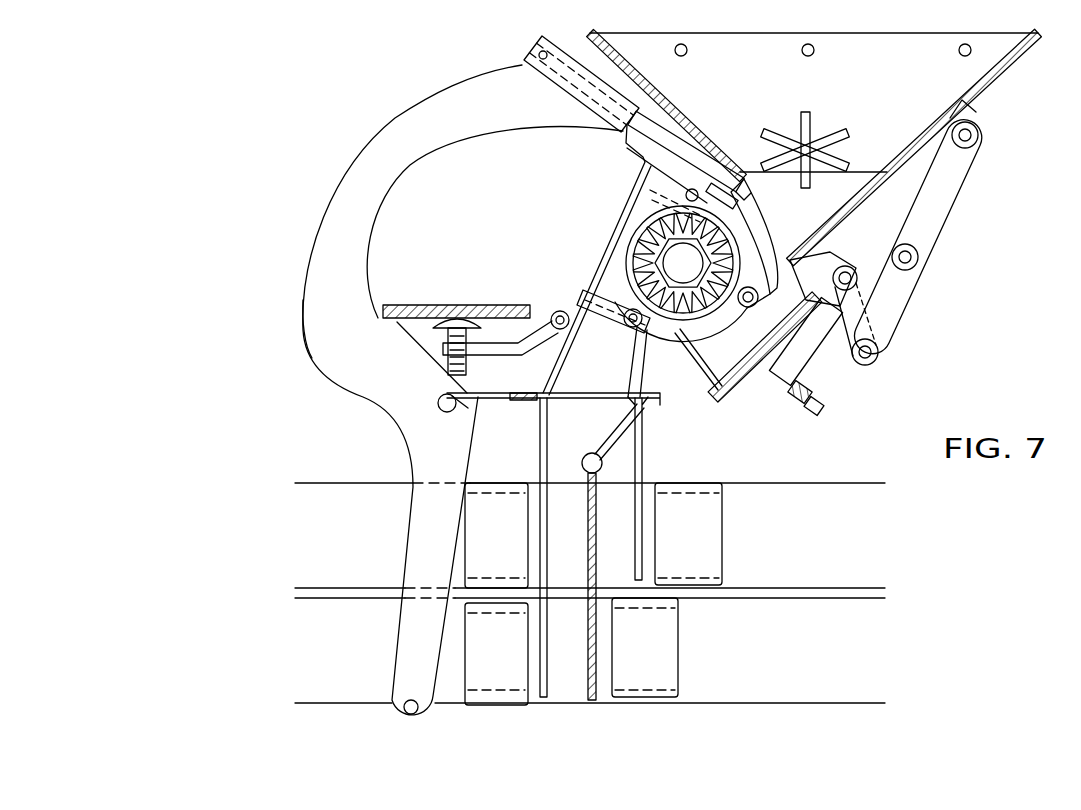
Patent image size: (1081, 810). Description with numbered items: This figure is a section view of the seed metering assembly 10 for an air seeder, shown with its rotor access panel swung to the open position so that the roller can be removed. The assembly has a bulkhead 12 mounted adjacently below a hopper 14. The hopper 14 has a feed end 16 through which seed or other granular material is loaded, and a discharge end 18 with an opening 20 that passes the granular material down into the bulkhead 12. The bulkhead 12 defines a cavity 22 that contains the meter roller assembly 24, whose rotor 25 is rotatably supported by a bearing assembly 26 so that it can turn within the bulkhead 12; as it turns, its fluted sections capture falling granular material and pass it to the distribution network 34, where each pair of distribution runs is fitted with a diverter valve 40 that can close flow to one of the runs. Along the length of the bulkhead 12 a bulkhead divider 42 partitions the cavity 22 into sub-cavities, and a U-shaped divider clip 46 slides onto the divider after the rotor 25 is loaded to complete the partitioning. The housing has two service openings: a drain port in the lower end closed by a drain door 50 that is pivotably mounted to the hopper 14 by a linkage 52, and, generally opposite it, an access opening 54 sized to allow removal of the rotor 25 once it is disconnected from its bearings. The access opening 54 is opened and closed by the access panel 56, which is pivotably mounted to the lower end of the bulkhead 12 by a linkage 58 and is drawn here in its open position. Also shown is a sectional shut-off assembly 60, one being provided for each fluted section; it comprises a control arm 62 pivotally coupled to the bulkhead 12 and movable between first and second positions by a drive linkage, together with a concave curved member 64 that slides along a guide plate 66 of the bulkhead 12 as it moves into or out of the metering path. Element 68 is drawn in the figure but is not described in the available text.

The seed metering assembly 10 is at (225, 98).
The bulkhead 12 is at (552, 372).
The hopper 14 is at (1020, 50).
The feed end 16 is at (900, 25).
The discharge end 18 is at (858, 172).
The opening 20 is at (830, 187).
The cavity 22 is at (737, 345).
The meter roller assembly 24 is at (610, 322).
The rotor 25 is at (683, 263).
The bearing assembly 26 is at (683, 365).
The distribution network 34 is at (367, 672).
The diverter valve 40 is at (603, 458).
The bulkhead divider 42 is at (820, 348).
The divider clip 46 is at (628, 198).
The drain door 50 is at (748, 385).
The linkage 52 is at (958, 178).
The access opening 54 is at (607, 227).
The access panel 56 is at (433, 305).
The linkage 58 is at (549, 311).
The shut-off assembly 60 is at (376, 125).
The control arm 62 is at (314, 265).
The concave curved member 64 is at (763, 238).
The guide plate 66 is at (650, 100).
The pivot 68 is at (632, 338).